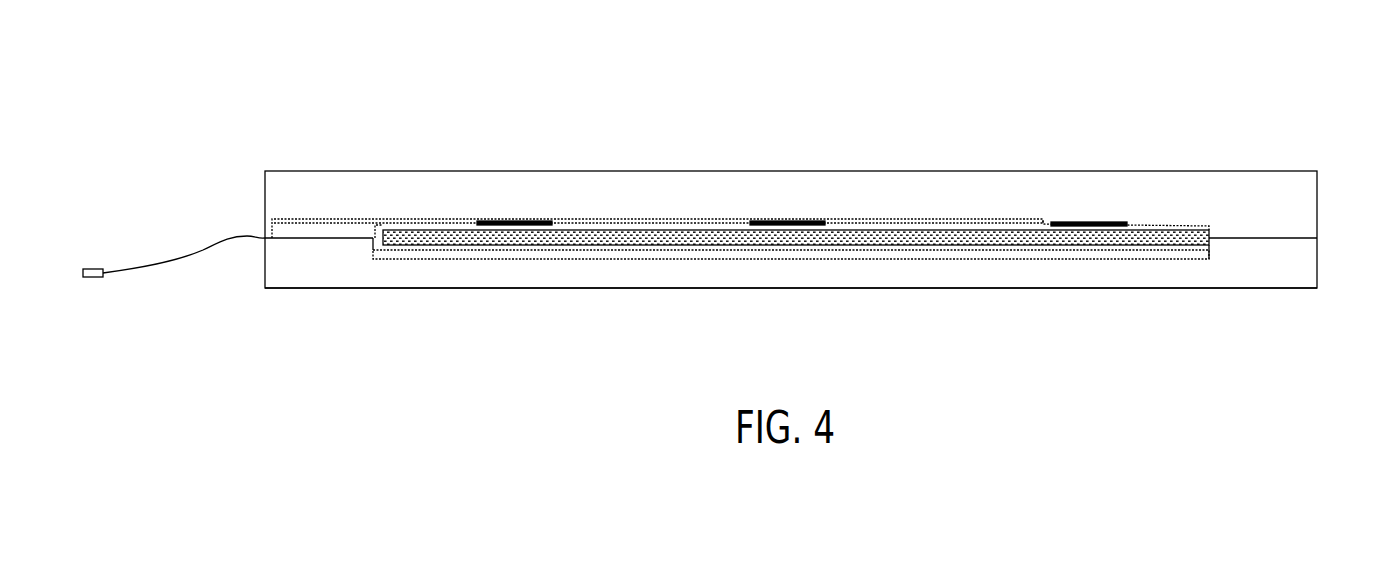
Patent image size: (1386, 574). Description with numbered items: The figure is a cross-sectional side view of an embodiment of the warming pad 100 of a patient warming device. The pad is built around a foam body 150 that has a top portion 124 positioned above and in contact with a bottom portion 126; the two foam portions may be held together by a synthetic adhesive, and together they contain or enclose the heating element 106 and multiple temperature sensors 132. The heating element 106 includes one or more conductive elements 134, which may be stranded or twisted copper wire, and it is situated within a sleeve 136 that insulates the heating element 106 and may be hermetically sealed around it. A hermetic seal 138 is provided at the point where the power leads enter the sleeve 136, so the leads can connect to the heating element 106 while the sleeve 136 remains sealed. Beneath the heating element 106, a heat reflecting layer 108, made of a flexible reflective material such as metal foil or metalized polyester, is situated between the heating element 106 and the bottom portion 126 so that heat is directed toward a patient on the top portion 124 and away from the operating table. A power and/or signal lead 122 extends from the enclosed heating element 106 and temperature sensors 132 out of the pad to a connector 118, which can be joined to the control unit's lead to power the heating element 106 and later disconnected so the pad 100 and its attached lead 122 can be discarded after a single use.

The warming pad 100 is at (265, 98).
The heating element 106 is at (1160, 196).
The heat reflecting layer 108 is at (798, 260).
The connector 118 is at (93, 278).
The power and/or signal lead 122 is at (175, 265).
The top portion 124 is at (1320, 212).
The bottom portion 126 is at (1320, 275).
The temperature sensors 132 is at (522, 220).
The conductive elements 134 is at (1172, 253).
The sleeve 136 is at (392, 253).
The hermetic seal 138 is at (366, 240).
The foam body 150 is at (1300, 171).